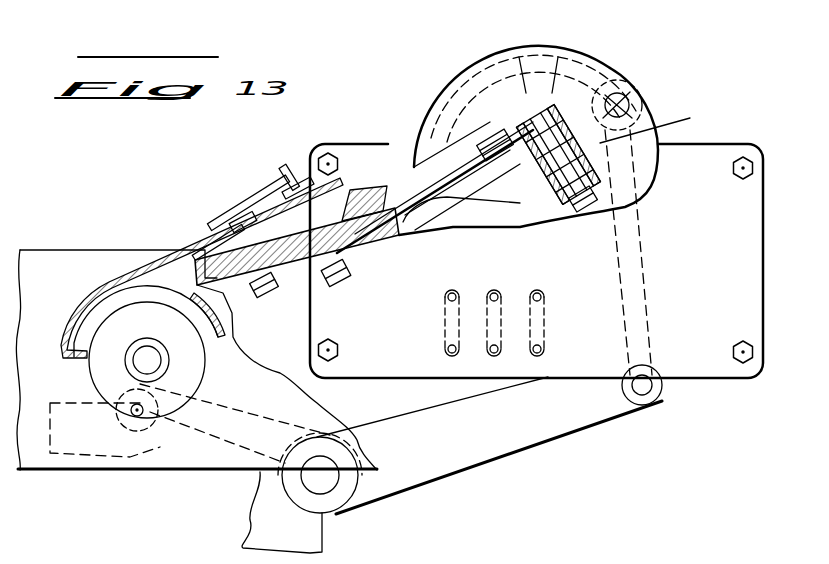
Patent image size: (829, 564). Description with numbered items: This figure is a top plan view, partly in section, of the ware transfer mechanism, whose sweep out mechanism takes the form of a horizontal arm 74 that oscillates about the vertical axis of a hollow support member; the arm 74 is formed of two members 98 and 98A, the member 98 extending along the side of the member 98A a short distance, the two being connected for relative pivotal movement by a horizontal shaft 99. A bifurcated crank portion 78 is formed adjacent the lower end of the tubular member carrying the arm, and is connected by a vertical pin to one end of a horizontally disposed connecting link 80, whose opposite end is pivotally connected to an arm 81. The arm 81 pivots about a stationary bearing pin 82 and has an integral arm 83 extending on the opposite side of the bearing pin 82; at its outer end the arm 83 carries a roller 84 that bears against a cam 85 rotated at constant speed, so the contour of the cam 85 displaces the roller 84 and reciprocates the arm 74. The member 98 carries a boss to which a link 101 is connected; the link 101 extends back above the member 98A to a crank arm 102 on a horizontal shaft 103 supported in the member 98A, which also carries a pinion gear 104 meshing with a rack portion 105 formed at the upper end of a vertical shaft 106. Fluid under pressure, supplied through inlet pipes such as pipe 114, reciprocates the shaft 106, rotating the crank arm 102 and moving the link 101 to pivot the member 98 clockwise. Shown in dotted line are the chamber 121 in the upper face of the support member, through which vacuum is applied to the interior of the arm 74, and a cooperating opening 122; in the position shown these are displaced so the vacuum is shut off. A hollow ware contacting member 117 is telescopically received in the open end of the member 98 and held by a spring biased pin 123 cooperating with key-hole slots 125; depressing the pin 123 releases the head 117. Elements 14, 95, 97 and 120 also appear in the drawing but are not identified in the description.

The frame 14 is at (53, 263).
The horizontal arm 74 is at (354, 247).
The bifurcated crank portion 78 is at (643, 103).
The connecting link 80 is at (648, 322).
The arm 81 is at (570, 424).
The stationary bearing pin 82 is at (322, 482).
The integral arm 83 is at (250, 430).
The roller 84 is at (143, 413).
The cam 85 is at (82, 433).
The slot 95 is at (448, 325).
The slot 97 is at (543, 323).
The member 98 is at (247, 218).
The member 98A is at (388, 242).
The horizontal shaft 99 is at (300, 178).
The link 101 is at (398, 256).
The crank arm 102 is at (491, 128).
The horizontal shaft 103 is at (587, 215).
The pinion gear 104 is at (664, 125).
The rack portion 105 is at (543, 168).
The vertical shaft 106 is at (256, 286).
The inlet pipe 114 is at (507, 303).
The ware contacting member 117 is at (118, 276).
The spacer 120 is at (343, 198).
The chamber 121 is at (585, 56).
The opening 122 is at (450, 110).
The spring biased pin 123 is at (215, 256).
The key-hole slots 125 is at (268, 172).